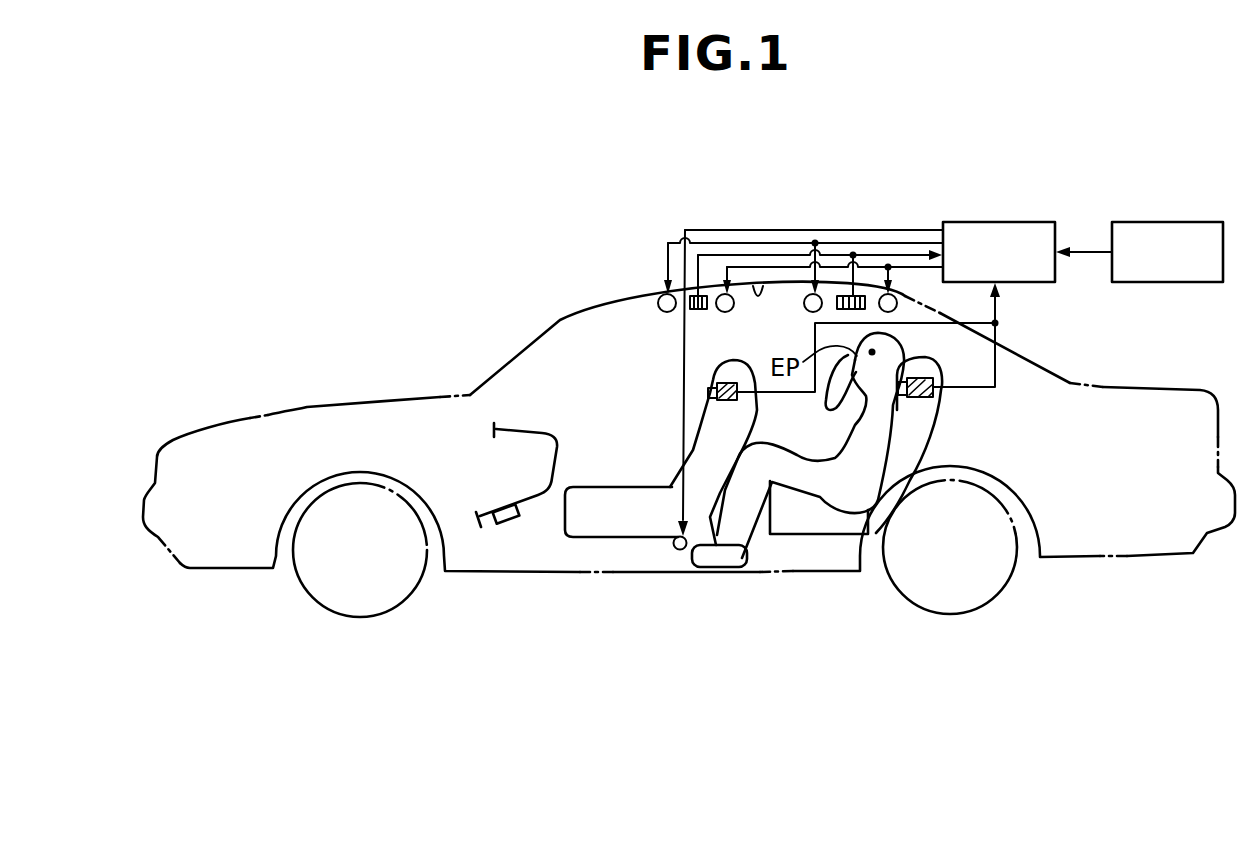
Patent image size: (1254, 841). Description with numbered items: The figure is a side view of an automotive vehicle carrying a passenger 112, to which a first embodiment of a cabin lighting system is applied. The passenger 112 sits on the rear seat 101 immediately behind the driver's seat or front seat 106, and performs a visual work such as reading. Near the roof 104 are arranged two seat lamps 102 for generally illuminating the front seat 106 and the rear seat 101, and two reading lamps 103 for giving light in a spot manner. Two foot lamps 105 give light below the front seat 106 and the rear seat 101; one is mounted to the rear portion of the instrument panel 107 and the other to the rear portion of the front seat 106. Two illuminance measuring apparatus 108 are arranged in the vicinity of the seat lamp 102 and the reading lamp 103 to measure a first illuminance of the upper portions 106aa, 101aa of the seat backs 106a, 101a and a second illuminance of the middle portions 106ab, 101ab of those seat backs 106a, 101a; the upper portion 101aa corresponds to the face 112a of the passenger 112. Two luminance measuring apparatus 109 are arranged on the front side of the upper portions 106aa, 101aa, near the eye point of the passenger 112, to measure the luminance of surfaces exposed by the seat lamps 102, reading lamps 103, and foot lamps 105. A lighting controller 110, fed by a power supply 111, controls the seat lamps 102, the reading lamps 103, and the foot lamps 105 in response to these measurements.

The rear seat 101 is at (812, 545).
The seat back of rear seat 101a is at (927, 427).
The upper portion of rear seat back 101aa is at (953, 355).
The middle portion of rear seat back 101ab is at (922, 475).
The seat lamp 102 is at (657, 293).
The reading lamp 103 is at (719, 292).
The roof 104 is at (755, 288).
The foot lamp 105 is at (507, 522).
The front seat 106 is at (598, 546).
The seat back of front seat 106a is at (720, 425).
The upper portion of front seat back 106aa is at (742, 384).
The middle portion of front seat back 106ab is at (692, 450).
The instrument panel 107 is at (547, 428).
The illuminance measuring apparatus 108 is at (691, 291).
The luminance measuring apparatus 109 is at (716, 385).
The lighting controller 110 is at (998, 228).
The power supply 111 is at (1167, 228).
The passenger 112 is at (856, 497).
The face of passenger 112a is at (806, 422).